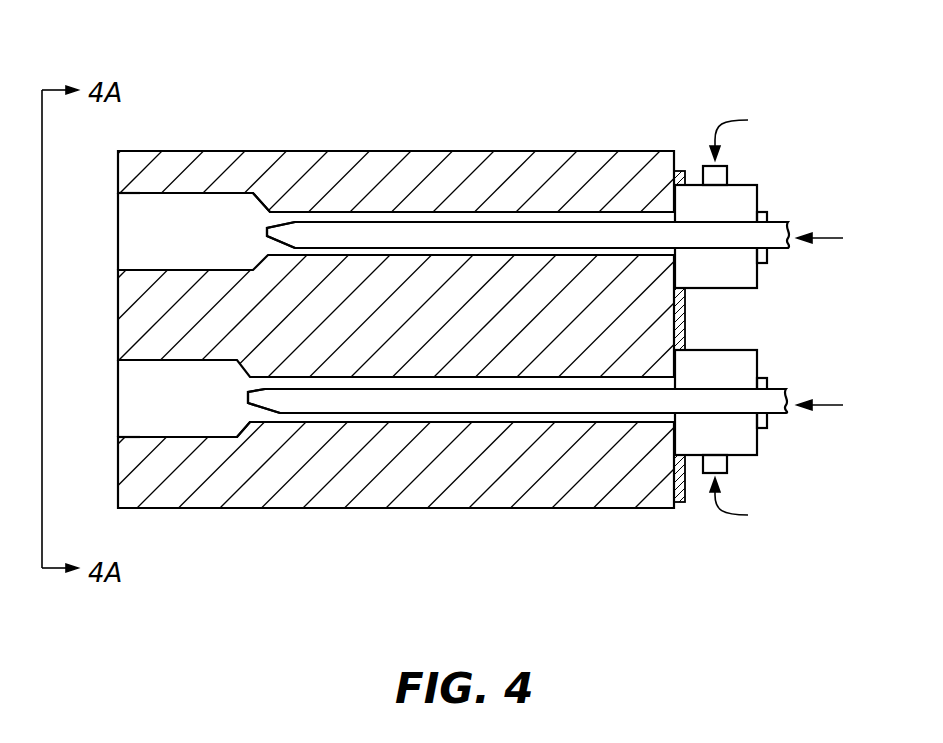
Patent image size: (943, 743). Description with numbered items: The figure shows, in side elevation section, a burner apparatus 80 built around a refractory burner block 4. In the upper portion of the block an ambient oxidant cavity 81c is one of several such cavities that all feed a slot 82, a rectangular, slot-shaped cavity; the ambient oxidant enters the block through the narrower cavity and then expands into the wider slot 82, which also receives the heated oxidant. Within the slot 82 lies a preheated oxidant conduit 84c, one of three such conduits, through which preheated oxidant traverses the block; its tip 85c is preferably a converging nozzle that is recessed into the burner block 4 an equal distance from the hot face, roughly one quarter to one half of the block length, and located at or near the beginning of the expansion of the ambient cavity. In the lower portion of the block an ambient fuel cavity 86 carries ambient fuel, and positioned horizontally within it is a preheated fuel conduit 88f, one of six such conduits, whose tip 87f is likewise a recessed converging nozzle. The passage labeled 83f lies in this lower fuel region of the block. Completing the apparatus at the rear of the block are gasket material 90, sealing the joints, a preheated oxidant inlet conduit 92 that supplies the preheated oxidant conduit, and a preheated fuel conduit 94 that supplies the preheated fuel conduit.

The refractory burner block 4 is at (623, 511).
The burner apparatus 80 is at (312, 570).
The ambient oxidant cavity 81c is at (318, 212).
The slot 82 is at (137, 195).
The fuel annular passage 83f is at (385, 423).
The preheated oxidant conduit 84c is at (423, 222).
The tip of preheated oxidant conduit 85c is at (265, 233).
The ambient fuel cavity 86 is at (131, 437).
The tip of preheated fuel conduit 87f is at (248, 402).
The preheated fuel conduit 88f is at (295, 413).
The gasket material 90 is at (684, 171).
The preheated oxidant inlet conduit 92 is at (760, 212).
The preheated fuel conduit 94 is at (762, 430).